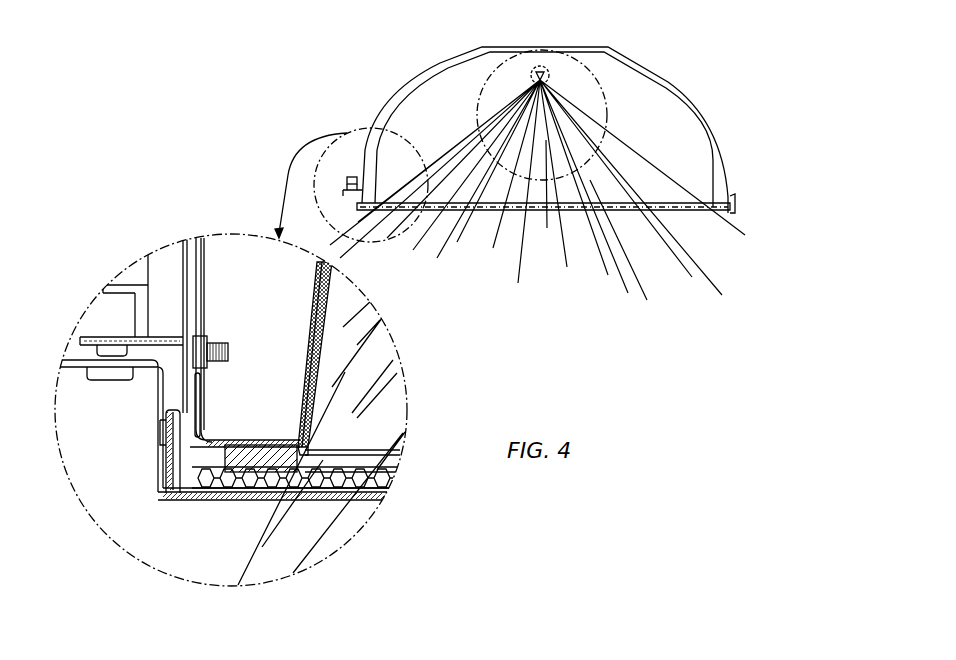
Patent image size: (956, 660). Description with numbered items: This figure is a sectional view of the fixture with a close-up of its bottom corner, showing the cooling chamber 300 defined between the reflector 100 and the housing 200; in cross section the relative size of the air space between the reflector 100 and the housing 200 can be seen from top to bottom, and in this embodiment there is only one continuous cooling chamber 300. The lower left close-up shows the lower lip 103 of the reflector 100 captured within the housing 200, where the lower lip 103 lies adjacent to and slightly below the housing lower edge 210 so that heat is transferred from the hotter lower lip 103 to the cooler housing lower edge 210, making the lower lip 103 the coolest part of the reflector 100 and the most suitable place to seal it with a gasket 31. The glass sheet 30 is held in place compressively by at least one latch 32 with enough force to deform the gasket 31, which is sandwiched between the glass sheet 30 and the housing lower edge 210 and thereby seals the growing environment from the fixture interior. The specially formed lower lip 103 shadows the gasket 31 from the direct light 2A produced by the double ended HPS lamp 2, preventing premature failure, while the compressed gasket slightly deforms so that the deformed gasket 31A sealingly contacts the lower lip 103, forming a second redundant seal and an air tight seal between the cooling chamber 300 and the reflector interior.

The double ended HPS lamp 2 is at (538, 64).
The direct light 2A is at (537, 175).
The reflector 100 is at (670, 82).
The housing 200 is at (405, 85).
The cooling chamber 300 is at (404, 134).
The latch 32 is at (82, 327).
The gasket 31 is at (200, 478).
The housing lower edge 210 is at (198, 446).
The lower lip 103 is at (312, 438).
The glass sheet 30 is at (367, 480).
The deformed gasket 31A is at (307, 467).